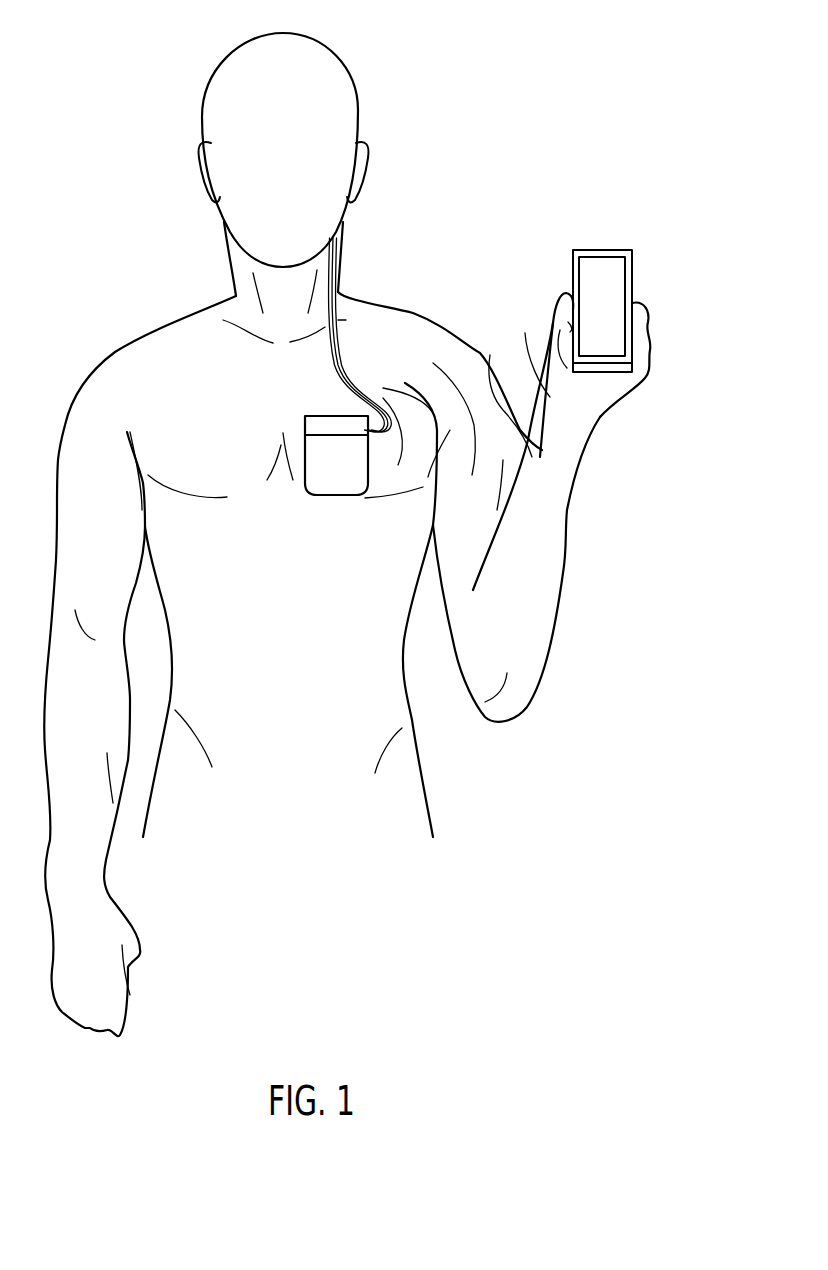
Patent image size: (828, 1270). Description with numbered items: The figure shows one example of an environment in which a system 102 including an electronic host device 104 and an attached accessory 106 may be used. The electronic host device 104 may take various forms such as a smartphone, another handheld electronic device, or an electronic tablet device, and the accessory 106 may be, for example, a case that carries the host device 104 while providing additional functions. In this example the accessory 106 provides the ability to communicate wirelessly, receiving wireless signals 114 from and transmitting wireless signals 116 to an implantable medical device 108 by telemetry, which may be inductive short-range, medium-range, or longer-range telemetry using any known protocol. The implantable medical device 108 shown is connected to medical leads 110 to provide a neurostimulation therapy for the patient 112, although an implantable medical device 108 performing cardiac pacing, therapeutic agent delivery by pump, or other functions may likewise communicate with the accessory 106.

The system 102 is at (659, 317).
The electronic host device 104 is at (607, 268).
The accessory 106 is at (598, 365).
The implantable medical device 108 is at (330, 460).
The medical leads 110 is at (333, 308).
The patient 112 is at (213, 73).
The wireless signals 114 is at (417, 387).
The wireless signals 116 is at (490, 355).